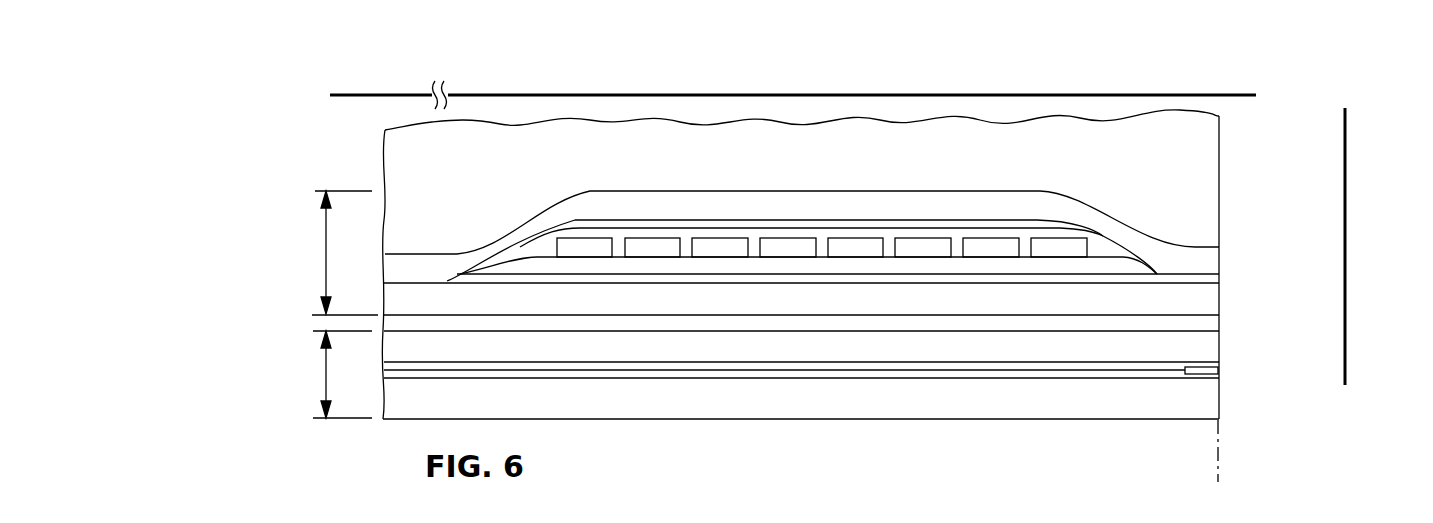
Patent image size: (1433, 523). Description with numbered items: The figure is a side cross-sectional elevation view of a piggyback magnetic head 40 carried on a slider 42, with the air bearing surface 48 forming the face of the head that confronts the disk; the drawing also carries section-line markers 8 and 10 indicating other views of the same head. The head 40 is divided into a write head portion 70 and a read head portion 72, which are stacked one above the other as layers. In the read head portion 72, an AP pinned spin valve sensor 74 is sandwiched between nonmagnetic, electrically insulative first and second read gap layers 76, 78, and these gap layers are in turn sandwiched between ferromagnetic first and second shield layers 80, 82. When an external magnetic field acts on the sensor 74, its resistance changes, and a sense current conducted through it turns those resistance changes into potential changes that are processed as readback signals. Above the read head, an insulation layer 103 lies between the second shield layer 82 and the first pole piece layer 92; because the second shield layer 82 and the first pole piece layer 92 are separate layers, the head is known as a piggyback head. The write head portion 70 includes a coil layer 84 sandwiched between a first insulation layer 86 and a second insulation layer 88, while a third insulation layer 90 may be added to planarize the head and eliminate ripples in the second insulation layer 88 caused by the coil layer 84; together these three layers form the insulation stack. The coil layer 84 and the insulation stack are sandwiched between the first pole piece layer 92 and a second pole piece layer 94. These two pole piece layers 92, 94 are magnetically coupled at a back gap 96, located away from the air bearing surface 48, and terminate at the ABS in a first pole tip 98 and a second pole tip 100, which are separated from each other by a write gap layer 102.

The section line for FIG. 8 is at (1362, 117).
The section line for FIG. 10 / magnetic disk 10 is at (338, 86).
The magnetic head 40 is at (358, 139).
The slider 42 is at (1205, 146).
The air bearing surface 48 is at (1214, 477).
The write head portion 70 is at (326, 259).
The read head portion 72 is at (326, 378).
The spin valve sensor 74 is at (1218, 371).
The first read gap layer 76 is at (870, 378).
The second read gap layer 78 is at (837, 362).
The first shield layer 80 is at (978, 403).
The second shield layer 82 is at (1083, 348).
The coil layer 84 is at (853, 245).
The first insulation layer 86 is at (758, 267).
The second insulation layer 88 is at (1102, 248).
The third insulation layer 90 is at (625, 225).
The first pole piece layer 92 is at (1133, 303).
The second pole piece layer 94 is at (995, 203).
The back gap 96 is at (423, 281).
The first pole tip 98 is at (1218, 303).
The second pole tip 100 is at (1213, 257).
The write gap layer 102 is at (1218, 278).
The insulation layer 103 is at (1038, 323).